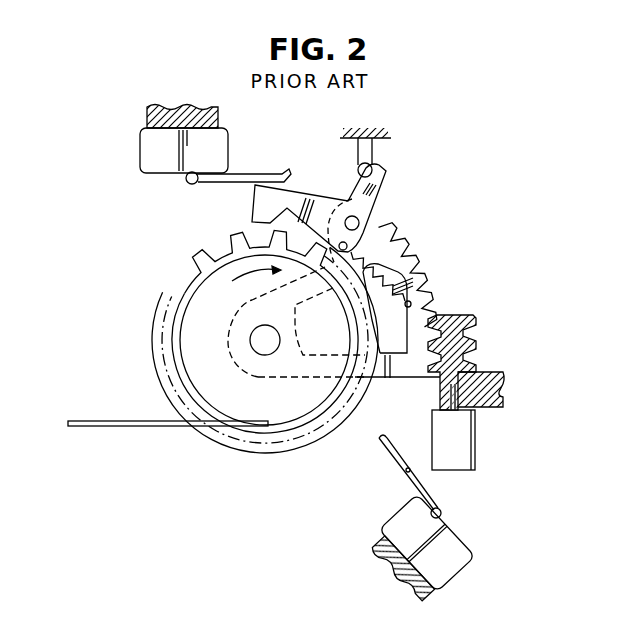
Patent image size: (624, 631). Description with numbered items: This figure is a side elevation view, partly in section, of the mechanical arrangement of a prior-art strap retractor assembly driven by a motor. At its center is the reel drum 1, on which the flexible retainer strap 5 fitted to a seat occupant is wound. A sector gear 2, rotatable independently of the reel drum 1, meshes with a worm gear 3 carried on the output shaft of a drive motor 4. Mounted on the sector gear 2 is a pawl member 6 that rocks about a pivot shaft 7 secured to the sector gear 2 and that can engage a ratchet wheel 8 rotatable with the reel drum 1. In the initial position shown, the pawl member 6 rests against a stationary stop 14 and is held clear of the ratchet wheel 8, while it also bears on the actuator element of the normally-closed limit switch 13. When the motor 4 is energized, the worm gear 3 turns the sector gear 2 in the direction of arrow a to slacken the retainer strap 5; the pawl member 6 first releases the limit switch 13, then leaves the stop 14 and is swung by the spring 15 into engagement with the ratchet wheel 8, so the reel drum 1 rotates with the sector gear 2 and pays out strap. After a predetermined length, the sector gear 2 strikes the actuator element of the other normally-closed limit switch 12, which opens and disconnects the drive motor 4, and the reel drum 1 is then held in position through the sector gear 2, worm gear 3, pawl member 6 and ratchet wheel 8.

The reel drum 1 is at (178, 356).
The sector gear 2 is at (372, 218).
The worm gear 3 is at (478, 335).
The drive motor 4 is at (480, 438).
The retainer strap 5 is at (131, 428).
The pawl member 6 is at (386, 183).
The pivot shaft 7 is at (362, 230).
The ratchet wheel 8 is at (205, 249).
The limit switch 12 is at (450, 534).
The limit switch 13 is at (140, 153).
The stationary stop 14 is at (358, 153).
The spring 15 is at (398, 297).